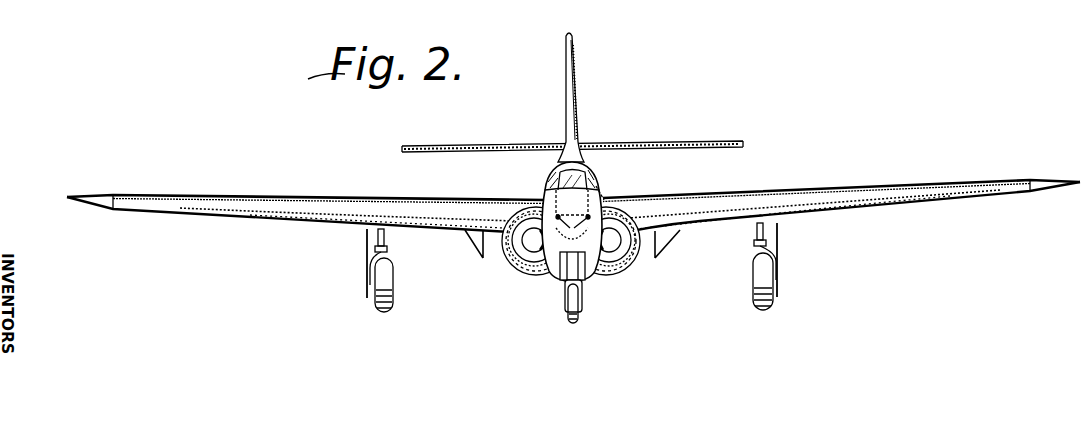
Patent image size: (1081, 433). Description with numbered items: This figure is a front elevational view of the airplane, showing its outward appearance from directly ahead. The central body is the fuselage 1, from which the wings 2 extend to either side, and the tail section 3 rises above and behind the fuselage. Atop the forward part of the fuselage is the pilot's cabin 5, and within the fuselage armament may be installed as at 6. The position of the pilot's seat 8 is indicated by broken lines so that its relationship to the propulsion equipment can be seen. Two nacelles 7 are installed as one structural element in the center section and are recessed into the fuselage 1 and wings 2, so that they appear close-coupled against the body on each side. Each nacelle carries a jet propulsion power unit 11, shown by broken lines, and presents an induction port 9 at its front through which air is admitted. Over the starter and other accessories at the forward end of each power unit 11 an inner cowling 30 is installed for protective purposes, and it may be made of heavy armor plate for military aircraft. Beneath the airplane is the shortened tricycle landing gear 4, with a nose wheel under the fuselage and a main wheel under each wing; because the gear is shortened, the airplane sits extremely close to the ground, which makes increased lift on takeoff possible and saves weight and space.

The fuselage 1 is at (572, 222).
The wings 2 is at (252, 212).
The tail section 3 is at (574, 73).
The tricycle landing gear 4 is at (379, 316).
The pilot's cabin 5 is at (548, 177).
The armament installation 6 is at (573, 219).
The nacelles 7 is at (546, 275).
The pilot's seat 8 is at (602, 193).
The induction port 9 is at (518, 262).
The jet propulsion power units 11 is at (512, 243).
The inner cowling 30 is at (535, 257).